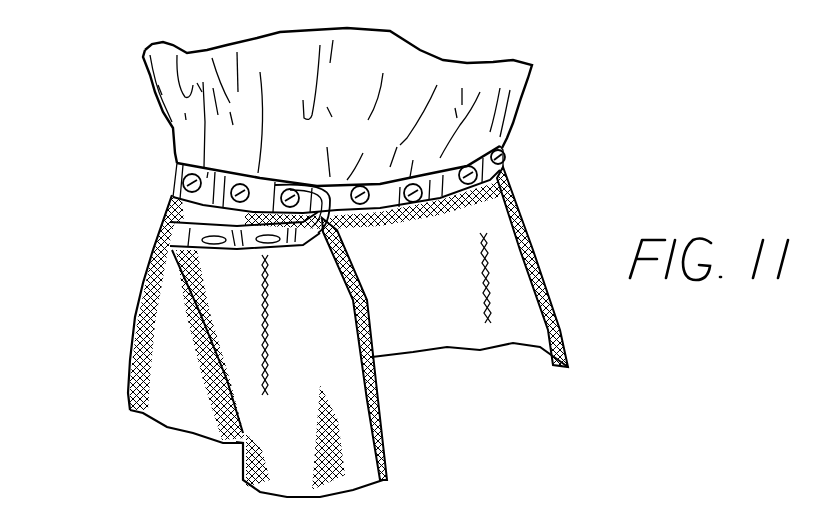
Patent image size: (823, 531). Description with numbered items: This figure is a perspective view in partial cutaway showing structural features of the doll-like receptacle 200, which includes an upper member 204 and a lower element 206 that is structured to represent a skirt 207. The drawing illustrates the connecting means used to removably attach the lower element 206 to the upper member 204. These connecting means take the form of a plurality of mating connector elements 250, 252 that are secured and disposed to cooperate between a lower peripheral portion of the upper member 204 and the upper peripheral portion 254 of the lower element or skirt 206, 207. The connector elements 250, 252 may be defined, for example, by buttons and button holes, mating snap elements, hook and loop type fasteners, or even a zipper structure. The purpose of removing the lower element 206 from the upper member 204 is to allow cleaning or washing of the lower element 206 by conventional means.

The receptacle 200 is at (566, 83).
The upper member 204 is at (526, 120).
The upper peripheral portion 254 is at (173, 193).
The mating connector element 252 is at (438, 218).
The mating connector element 250 is at (218, 244).
The lower element 206 is at (127, 287).
The skirt 207 is at (128, 360).